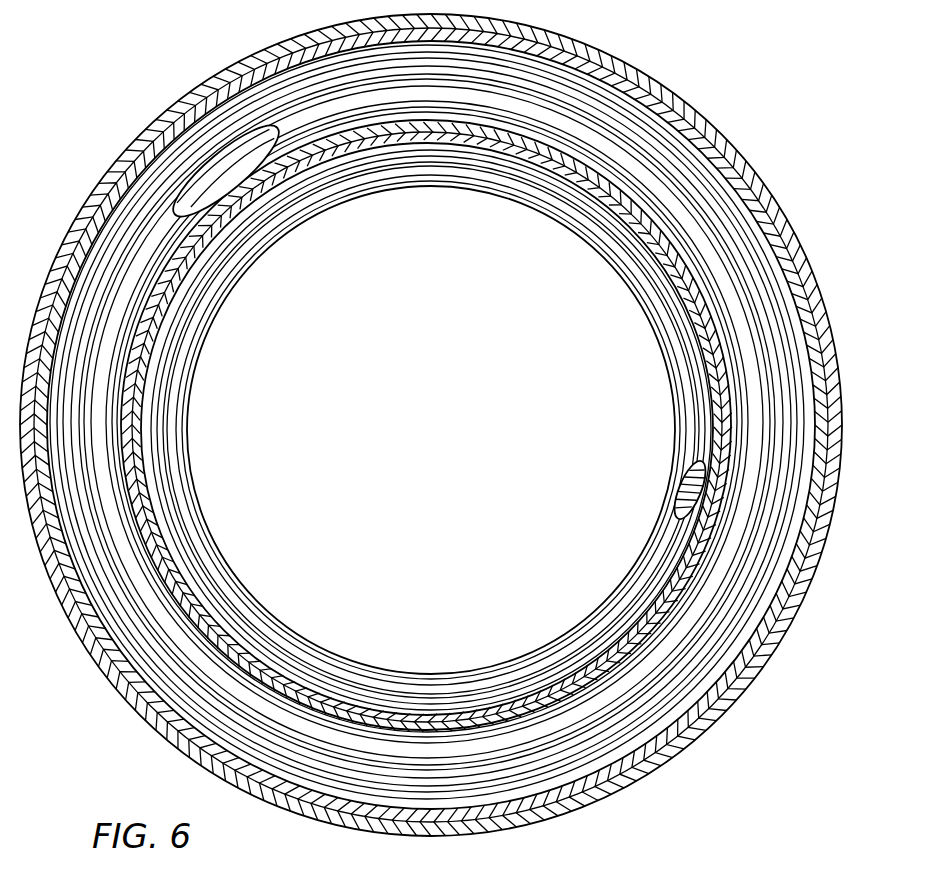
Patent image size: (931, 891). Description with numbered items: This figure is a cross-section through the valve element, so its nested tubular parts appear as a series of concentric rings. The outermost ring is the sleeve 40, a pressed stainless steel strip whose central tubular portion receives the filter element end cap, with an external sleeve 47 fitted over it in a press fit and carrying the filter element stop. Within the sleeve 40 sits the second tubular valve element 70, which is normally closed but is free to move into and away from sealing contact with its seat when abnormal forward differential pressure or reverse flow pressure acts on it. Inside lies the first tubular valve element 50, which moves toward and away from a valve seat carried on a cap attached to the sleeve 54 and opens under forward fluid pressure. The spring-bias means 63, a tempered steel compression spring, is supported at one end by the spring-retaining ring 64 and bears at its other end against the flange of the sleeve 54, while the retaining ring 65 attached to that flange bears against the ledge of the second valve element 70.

The sleeve 40 is at (106, 196).
The external sleeve 47 is at (702, 118).
The first tubular valve element 50 is at (702, 330).
The sleeve 54 is at (148, 353).
The spring-bias means 63 is at (152, 622).
The spring-retaining ring 64 is at (395, 690).
The retaining ring 65 is at (632, 562).
The second tubular valve element 70 is at (775, 272).